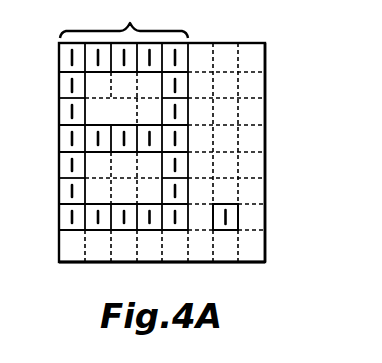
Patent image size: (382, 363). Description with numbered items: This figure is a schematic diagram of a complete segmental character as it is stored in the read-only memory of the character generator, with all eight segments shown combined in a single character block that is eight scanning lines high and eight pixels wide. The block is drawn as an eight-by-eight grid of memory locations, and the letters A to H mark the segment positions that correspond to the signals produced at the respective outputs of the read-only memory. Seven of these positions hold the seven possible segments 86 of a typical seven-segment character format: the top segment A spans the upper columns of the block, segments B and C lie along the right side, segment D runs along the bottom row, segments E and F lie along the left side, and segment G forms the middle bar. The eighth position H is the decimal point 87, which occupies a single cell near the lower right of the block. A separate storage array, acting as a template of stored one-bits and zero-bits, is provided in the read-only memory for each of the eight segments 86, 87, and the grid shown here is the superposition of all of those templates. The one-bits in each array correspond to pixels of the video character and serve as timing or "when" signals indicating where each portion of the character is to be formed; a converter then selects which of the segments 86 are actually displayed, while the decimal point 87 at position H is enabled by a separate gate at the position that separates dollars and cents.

The segment 86 is at (160, 88).
The decimal point segment 87 is at (227, 204).
The segment position A is at (124, 19).
The segment position B is at (226, 123).
The segment position C is at (226, 178).
The segment position D is at (136, 246).
The segment position E is at (45, 181).
The segment position F is at (45, 99).
The segment position G is at (124, 112).
The decimal point segment position H is at (226, 246).